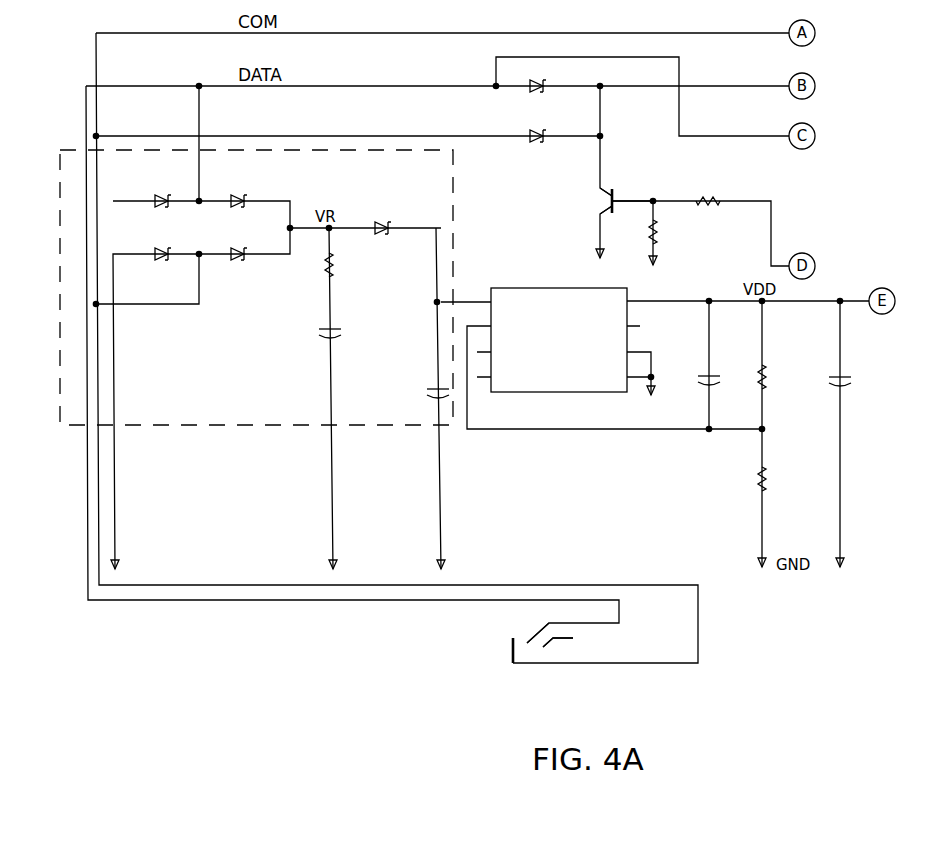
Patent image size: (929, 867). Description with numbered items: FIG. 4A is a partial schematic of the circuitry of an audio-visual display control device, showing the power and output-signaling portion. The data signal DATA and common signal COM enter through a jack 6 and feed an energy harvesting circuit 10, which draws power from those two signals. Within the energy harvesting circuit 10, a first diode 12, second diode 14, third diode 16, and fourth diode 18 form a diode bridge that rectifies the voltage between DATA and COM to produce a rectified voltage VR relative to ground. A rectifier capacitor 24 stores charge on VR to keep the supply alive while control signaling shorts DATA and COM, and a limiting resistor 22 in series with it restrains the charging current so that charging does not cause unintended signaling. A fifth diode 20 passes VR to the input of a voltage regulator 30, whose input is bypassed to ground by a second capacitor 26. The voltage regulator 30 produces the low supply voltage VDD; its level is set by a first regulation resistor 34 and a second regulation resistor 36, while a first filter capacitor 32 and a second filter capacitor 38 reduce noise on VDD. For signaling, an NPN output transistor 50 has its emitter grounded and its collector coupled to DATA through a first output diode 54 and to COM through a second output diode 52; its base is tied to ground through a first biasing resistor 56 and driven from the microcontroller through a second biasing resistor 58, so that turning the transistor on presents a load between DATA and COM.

The energy harvesting circuit 10 is at (72, 425).
The first diode 12 is at (165, 196).
The second diode 14 is at (240, 196).
The third diode 16 is at (162, 262).
The fourth diode 18 is at (240, 262).
The fifth diode 20 is at (382, 222).
The limiting resistor 22 is at (338, 272).
The rectifier capacitor 24 is at (343, 338).
The second capacitor 26 is at (426, 396).
The voltage regulator 30 is at (546, 286).
The first filter capacitor 32 is at (704, 378).
The first regulation resistor 34 is at (770, 372).
The second regulation resistor 36 is at (756, 482).
The second filter capacitor 38 is at (854, 384).
The output transistor 50 is at (605, 203).
The second output diode 52 is at (537, 146).
The first output diode 54 is at (538, 78).
The first biasing resistor 56 is at (659, 239).
The second biasing resistor 58 is at (708, 194).
The jack 6 is at (511, 652).